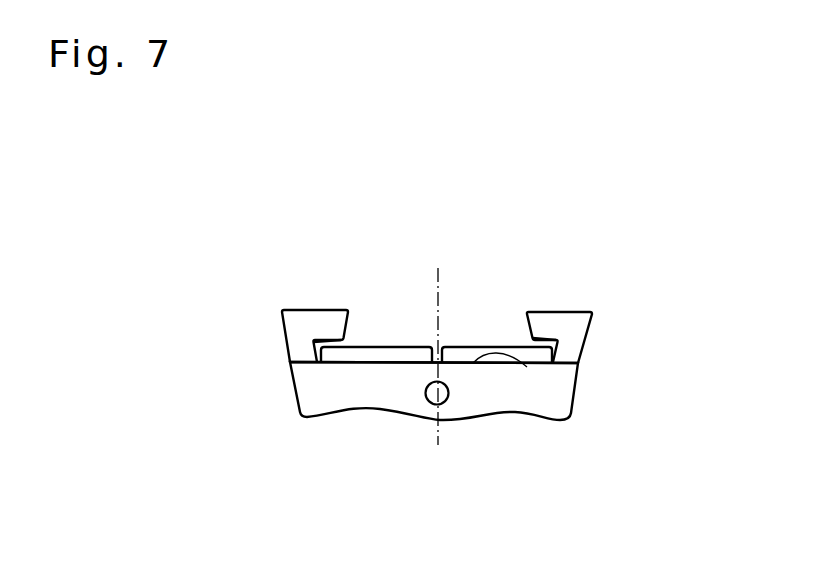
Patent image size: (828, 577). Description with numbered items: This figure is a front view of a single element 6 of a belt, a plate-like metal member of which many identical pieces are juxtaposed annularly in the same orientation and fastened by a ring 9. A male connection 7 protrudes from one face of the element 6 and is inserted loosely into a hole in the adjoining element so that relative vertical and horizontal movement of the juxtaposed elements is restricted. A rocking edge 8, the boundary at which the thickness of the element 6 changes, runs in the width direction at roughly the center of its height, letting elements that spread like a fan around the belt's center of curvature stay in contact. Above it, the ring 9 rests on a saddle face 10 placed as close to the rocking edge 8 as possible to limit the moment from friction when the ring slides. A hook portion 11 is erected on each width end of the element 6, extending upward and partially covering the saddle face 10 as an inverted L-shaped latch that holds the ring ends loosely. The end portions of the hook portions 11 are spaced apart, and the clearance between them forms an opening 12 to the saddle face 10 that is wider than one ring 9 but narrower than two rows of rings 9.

The element 6 is at (567, 389).
The male connection 7 is at (428, 404).
The rocking edge 8 is at (307, 361).
The ring 9 is at (494, 332).
The saddle face 10 is at (527, 367).
The hook portion 11 is at (322, 322).
The opening 12 is at (530, 327).